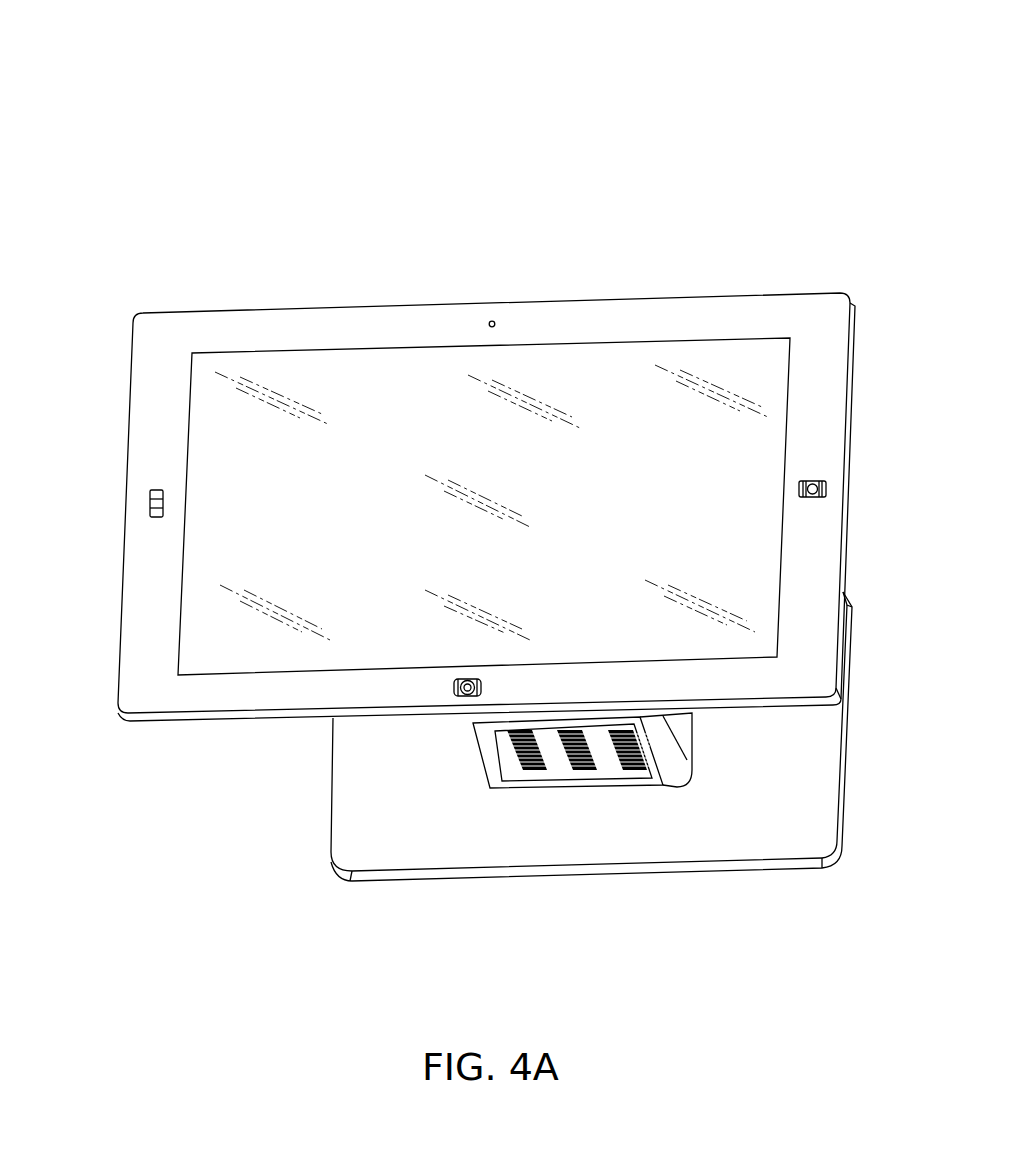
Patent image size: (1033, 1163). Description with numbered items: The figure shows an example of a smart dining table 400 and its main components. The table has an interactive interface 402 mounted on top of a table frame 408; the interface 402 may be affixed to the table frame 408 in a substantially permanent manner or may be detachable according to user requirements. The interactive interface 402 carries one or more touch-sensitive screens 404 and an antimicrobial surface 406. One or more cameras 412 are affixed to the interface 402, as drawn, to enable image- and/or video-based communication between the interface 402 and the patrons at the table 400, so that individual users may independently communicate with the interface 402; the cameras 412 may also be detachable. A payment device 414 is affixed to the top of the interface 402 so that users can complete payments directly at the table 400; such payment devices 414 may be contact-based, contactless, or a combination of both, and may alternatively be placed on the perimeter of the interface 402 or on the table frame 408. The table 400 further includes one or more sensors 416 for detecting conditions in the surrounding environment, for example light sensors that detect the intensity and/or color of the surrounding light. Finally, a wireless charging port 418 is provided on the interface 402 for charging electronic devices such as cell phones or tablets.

The smart dining table 400 is at (748, 98).
The interactive interface 402 is at (166, 338).
The touch-sensitive screen 404 is at (360, 510).
The antimicrobial surface 406 is at (684, 378).
The table frame 408 is at (717, 847).
The camera 412 is at (492, 320).
The payment device 414 is at (148, 503).
The sensor 416 is at (463, 700).
The wireless charging port 418 is at (827, 488).